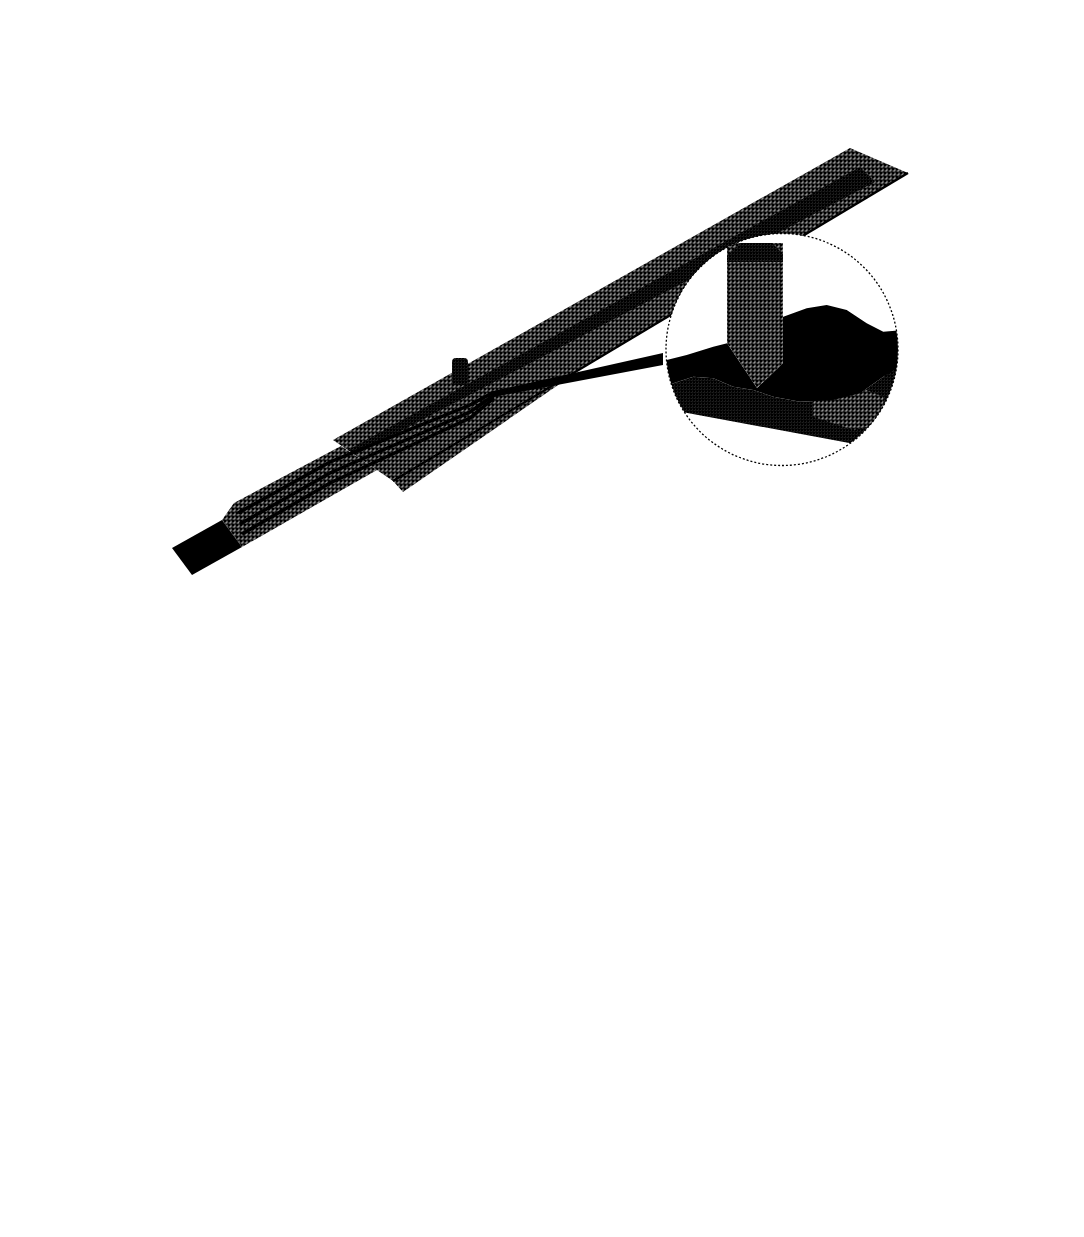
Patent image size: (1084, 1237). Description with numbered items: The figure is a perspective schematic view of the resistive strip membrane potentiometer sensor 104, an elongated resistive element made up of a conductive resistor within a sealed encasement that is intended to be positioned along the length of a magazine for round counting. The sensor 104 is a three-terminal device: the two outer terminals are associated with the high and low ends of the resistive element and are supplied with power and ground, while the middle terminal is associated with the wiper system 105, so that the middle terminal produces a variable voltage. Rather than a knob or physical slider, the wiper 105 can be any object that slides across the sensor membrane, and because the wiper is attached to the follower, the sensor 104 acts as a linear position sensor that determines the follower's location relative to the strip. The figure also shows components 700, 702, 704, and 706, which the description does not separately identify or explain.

The resistive strip membrane potentiometer sensor 104 is at (536, 108).
The wiper system 105 is at (446, 378).
The flexible cable 700 is at (376, 480).
The conductors 702 is at (322, 497).
The connector 704 is at (257, 520).
The substrate 706 is at (447, 447).